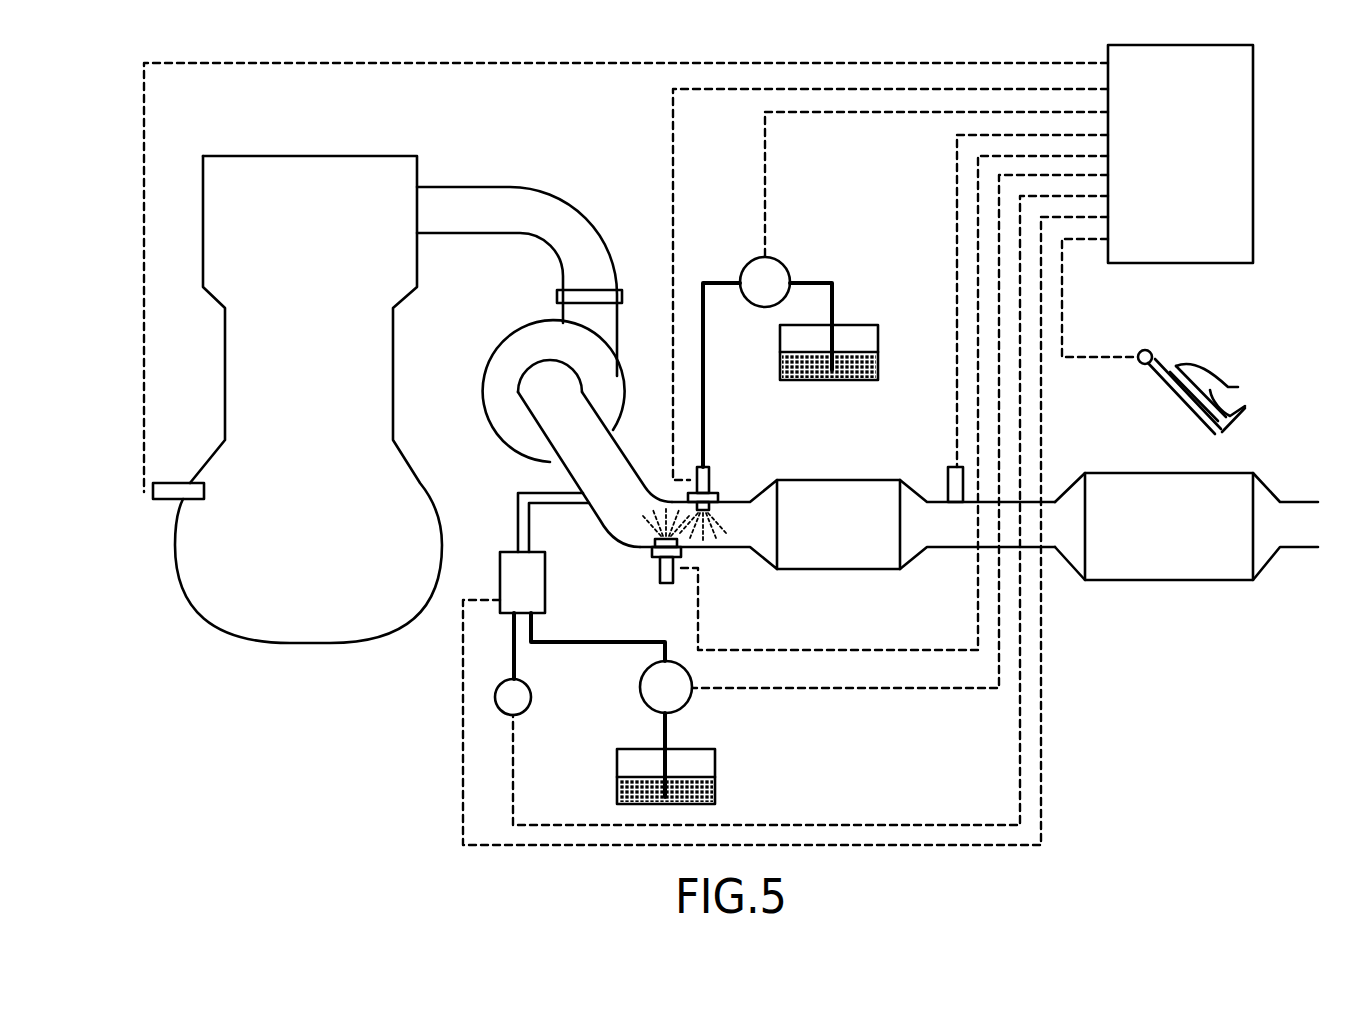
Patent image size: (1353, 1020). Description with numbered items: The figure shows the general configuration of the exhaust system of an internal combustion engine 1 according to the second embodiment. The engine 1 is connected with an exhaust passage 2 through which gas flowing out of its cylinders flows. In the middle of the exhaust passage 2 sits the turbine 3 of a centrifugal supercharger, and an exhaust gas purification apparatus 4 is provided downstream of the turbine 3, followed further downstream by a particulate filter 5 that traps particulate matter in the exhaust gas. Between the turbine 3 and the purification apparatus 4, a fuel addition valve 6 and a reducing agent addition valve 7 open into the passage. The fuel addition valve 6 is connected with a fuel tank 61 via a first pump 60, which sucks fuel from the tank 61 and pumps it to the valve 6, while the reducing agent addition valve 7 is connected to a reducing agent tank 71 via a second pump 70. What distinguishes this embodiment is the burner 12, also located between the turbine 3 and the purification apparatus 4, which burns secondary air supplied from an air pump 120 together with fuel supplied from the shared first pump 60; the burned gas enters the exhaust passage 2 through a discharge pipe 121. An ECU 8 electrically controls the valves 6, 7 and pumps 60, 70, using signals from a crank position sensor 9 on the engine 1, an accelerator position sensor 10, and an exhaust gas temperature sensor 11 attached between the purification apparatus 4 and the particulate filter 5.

The internal combustion engine 1 is at (290, 156).
The exhaust passage 2 is at (512, 187).
The turbine 3 is at (517, 330).
The exhaust gas purification apparatus 4 is at (815, 569).
The particulate filter 5 is at (1152, 580).
The fuel addition valve 6 is at (660, 575).
The reducing agent addition valve 7 is at (712, 478).
The ECU 8 is at (1253, 127).
The crank position sensor 9 is at (160, 500).
The accelerator position sensor 10 is at (1152, 355).
The exhaust gas temperature sensor 11 is at (945, 478).
The burner 12 is at (545, 590).
The first pump 60 is at (688, 700).
The fuel tank 61 is at (710, 762).
The second pump 70 is at (782, 268).
The reducing agent tank 71 is at (858, 325).
The air pump 120 is at (530, 705).
The discharge pipe 121 is at (518, 495).